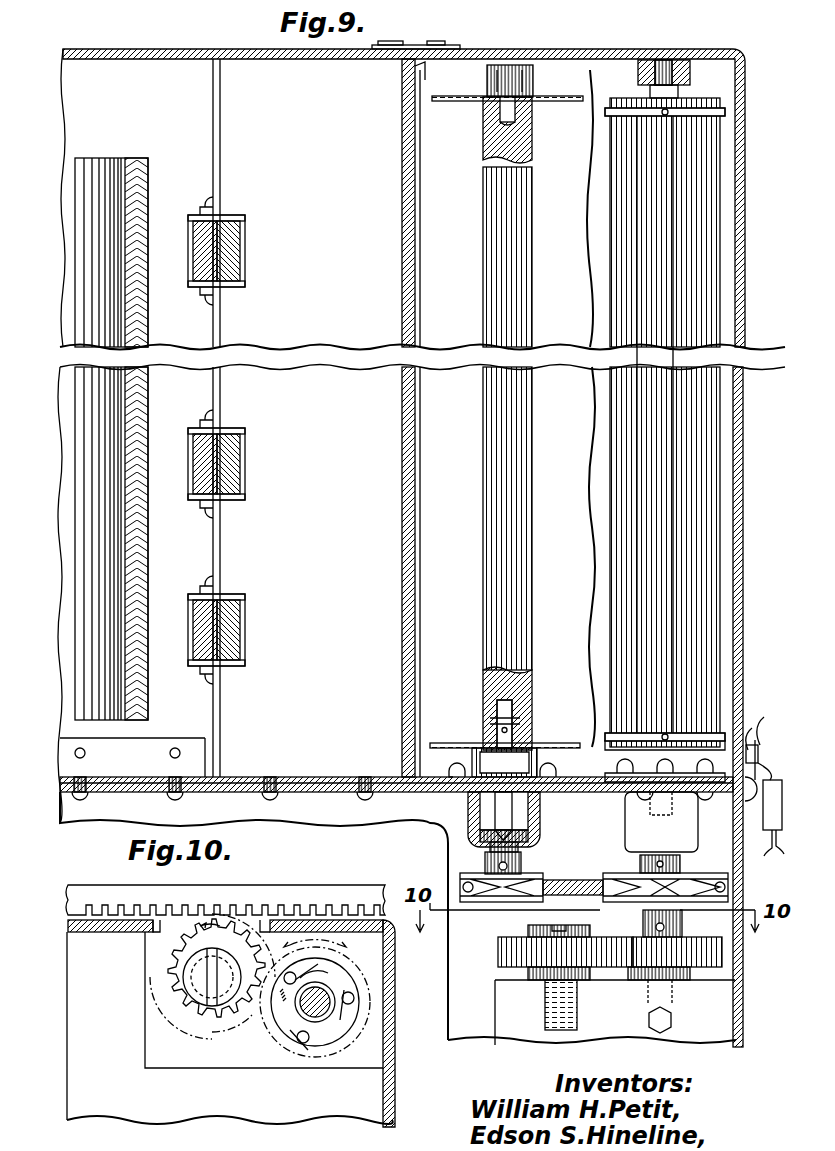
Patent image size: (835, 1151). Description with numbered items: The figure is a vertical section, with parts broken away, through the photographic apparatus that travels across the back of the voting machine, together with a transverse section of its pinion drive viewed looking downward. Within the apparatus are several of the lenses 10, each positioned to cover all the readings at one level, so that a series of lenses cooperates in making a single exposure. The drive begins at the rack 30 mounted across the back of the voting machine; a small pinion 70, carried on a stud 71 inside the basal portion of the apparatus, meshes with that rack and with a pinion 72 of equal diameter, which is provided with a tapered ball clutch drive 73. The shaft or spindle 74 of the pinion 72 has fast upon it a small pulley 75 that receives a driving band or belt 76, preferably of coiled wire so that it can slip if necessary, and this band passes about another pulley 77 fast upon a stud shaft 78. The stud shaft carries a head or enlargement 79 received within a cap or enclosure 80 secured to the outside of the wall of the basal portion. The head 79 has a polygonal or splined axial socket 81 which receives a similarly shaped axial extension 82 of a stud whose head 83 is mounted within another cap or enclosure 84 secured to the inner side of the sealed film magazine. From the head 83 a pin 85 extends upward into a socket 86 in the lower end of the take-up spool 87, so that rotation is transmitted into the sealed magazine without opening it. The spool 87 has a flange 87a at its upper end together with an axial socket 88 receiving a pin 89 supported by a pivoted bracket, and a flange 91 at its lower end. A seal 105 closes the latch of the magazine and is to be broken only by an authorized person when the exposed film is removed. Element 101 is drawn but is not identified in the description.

In FIG. 9, the lens 10 is at (247, 250).
In FIG. 10, the rack 30 is at (84, 895).
In FIG. 9, the pinion 70 is at (498, 950).
In FIG. 10, the pinion 70 is at (212, 917).
In FIG. 10, the stud 71 is at (190, 977).
In FIG. 9, the pinion 72 is at (722, 950).
In FIG. 10, the pinion 72 is at (272, 1025).
In FIG. 10, the tapered ball clutch drive 73 is at (330, 1036).
In FIG. 9, the shaft or spindle 74 is at (650, 910).
In FIG. 9, the small pulley 75 is at (690, 876).
In FIG. 9, the driving band or belt 76 is at (730, 890).
In FIG. 9, the pulley 77 is at (500, 895).
In FIG. 9, the stud shaft 78 is at (522, 858).
In FIG. 9, the head or enlargement 79 is at (480, 834).
In FIG. 9, the cap or enclosure 80 is at (470, 808).
In FIG. 9, the axial socket 81 is at (490, 848).
In FIG. 9, the axial extension 82 is at (512, 808).
In FIG. 9, the head 83 is at (535, 752).
In FIG. 9, the cap or enclosure 84 is at (550, 776).
In FIG. 9, the pin 85 is at (512, 718).
In FIG. 9, the socket 86 is at (493, 695).
In FIG. 9, the take-up spool 87 is at (492, 483).
In FIG. 9, the flange 87a is at (580, 92).
In FIG. 9, the axial socket 88 is at (500, 112).
In FIG. 9, the pin 89 is at (487, 86).
In FIG. 9, the flange 91 is at (452, 742).
In FIG. 9, the cylinder 101 is at (610, 115).
In FIG. 9, the seal 105 is at (784, 805).